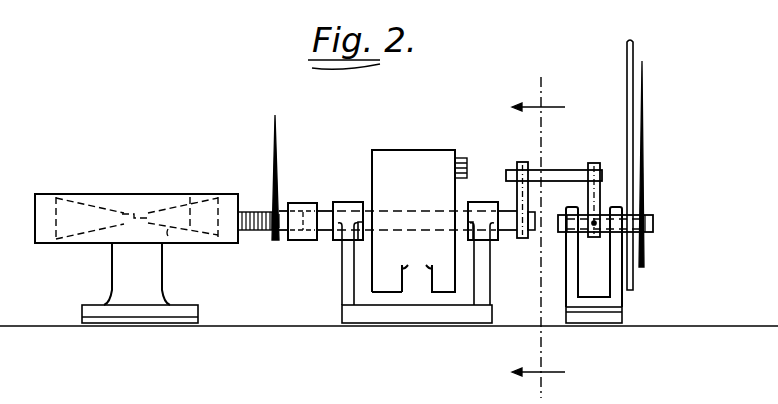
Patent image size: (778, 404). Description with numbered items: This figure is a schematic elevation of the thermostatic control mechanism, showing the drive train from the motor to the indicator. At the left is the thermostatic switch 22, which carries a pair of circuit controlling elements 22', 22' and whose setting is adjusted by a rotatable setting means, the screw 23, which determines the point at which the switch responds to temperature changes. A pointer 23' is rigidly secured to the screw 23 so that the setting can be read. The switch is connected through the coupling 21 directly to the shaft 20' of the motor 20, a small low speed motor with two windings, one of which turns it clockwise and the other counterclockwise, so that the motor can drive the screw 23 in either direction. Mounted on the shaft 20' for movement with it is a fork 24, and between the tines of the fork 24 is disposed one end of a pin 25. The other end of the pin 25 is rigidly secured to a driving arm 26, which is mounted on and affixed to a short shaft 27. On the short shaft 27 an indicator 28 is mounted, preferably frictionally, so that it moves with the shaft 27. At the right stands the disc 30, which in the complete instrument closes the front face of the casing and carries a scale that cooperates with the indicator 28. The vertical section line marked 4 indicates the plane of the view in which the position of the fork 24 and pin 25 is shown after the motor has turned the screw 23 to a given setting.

The motor 20 is at (415, 206).
The shaft 20' is at (407, 165).
The coupling 21 is at (302, 200).
The thermostatic switch 22 is at (136, 233).
The circuit controlling elements 22' is at (190, 190).
The screw 23 is at (303, 168).
The pointer 23' is at (247, 160).
The fork 24 is at (522, 163).
The pin 25 is at (555, 172).
The driving arm 26 is at (596, 165).
The short shaft 27 is at (653, 222).
The indicator 28 is at (645, 117).
The disc 30 is at (633, 55).
The section line 4- 4 is at (538, 226).